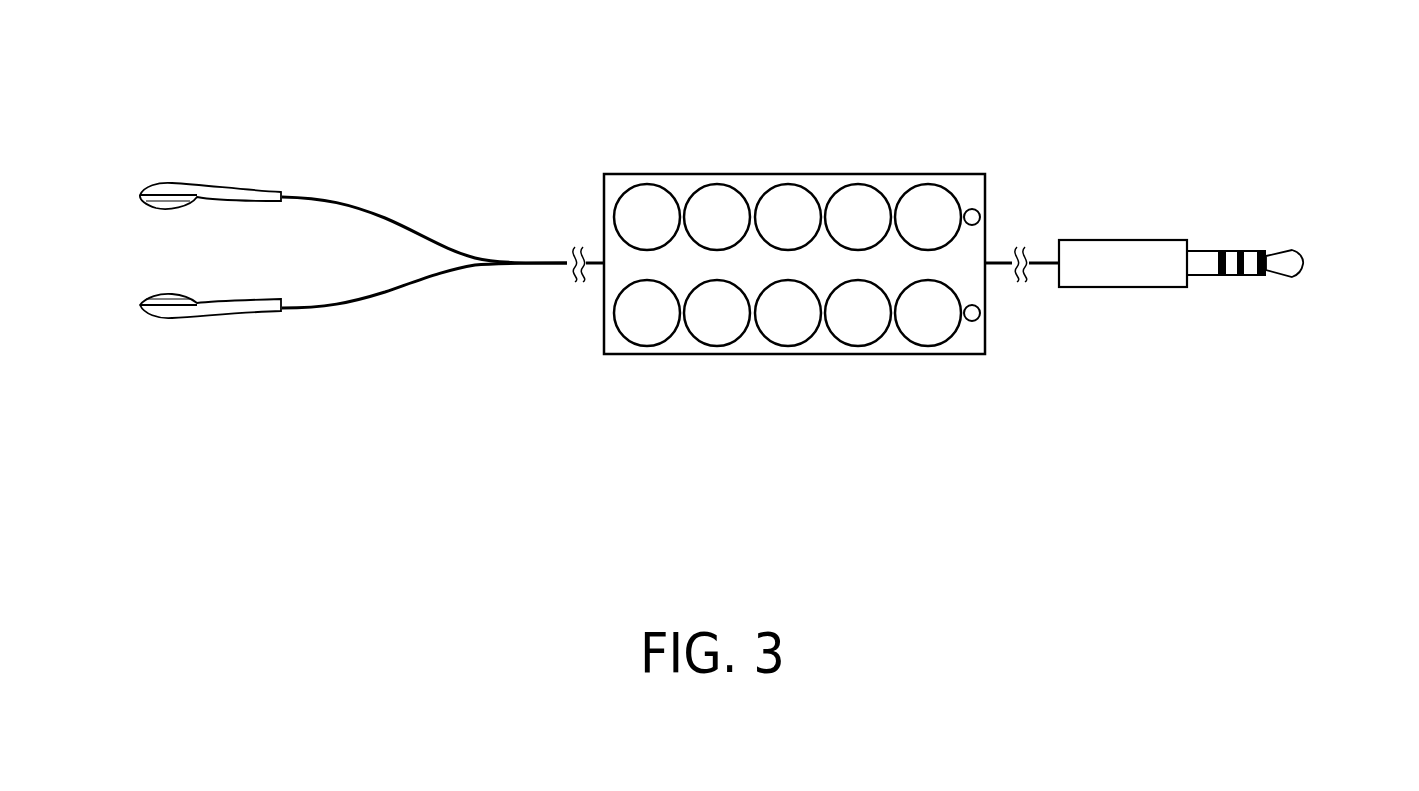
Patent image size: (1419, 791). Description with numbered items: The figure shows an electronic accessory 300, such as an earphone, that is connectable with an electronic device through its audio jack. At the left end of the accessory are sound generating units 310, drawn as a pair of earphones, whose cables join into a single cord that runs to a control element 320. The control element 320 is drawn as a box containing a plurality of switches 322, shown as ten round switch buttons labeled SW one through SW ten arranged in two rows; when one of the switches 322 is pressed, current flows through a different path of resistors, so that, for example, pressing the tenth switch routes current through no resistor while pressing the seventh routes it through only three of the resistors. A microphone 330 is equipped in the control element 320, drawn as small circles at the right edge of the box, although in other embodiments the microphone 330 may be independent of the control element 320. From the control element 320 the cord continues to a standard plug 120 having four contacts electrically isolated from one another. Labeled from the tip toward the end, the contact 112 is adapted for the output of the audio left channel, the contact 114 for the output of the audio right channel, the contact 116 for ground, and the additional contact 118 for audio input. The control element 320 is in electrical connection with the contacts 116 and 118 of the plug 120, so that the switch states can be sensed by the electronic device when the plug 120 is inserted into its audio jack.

The electronic accessory 300 is at (580, 137).
The sound generating unit 310 is at (233, 173).
The control element 320 is at (789, 137).
The switches 322 is at (702, 343).
The microphone 330 is at (975, 209).
The plug 120 is at (1115, 237).
The contact 118 is at (1204, 254).
The contact 116 is at (1230, 256).
The contact 114 is at (1253, 256).
The contact 112 is at (1296, 270).